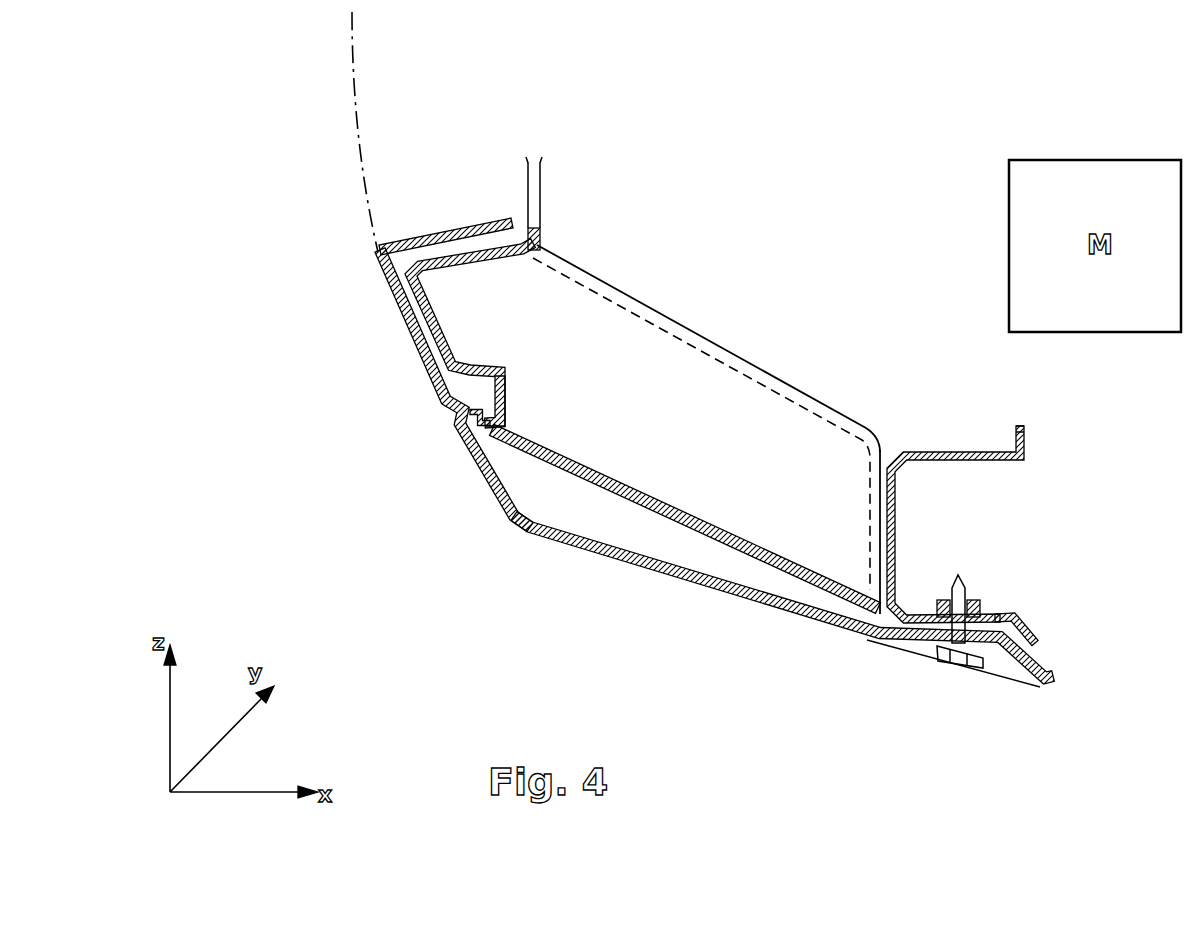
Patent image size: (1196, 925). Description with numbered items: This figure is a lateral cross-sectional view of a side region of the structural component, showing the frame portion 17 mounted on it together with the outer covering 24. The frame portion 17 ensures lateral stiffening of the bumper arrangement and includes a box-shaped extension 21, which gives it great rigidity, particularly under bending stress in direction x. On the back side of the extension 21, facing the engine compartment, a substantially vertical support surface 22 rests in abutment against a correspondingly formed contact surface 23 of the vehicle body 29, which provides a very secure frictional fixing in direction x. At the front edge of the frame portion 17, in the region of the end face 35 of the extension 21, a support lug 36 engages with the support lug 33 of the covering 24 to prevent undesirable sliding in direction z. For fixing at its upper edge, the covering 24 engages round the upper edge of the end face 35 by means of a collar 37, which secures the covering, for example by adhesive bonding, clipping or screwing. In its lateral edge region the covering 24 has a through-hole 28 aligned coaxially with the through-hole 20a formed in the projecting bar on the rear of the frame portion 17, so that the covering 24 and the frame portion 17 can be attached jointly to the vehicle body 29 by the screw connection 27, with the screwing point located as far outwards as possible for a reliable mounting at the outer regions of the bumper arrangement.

The frame portion 17 is at (668, 310).
The through-hole 20a is at (990, 622).
The box-shaped extension 21 is at (724, 385).
The support surface 22 is at (895, 521).
The contact surface 23 is at (885, 546).
The outer covering 24 is at (750, 605).
The screw connection 27 is at (962, 600).
The through-hole 28 is at (972, 645).
The vehicle body 29 is at (1022, 433).
The support lug 33 is at (484, 398).
The end face 35 is at (415, 323).
The support lug 36 is at (466, 430).
The collar 37 is at (455, 235).